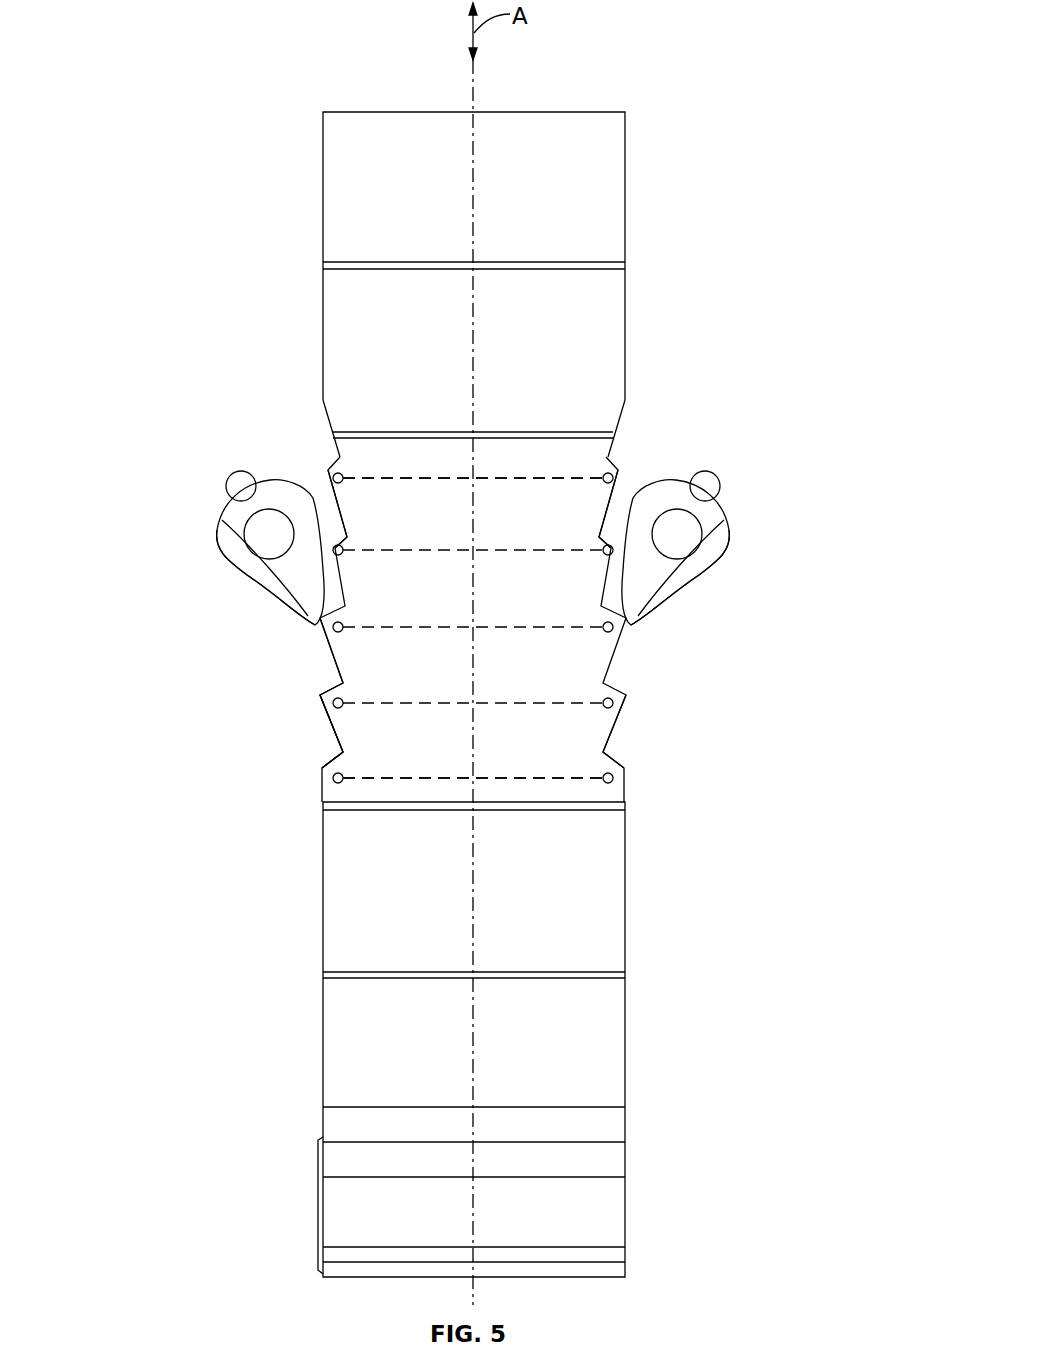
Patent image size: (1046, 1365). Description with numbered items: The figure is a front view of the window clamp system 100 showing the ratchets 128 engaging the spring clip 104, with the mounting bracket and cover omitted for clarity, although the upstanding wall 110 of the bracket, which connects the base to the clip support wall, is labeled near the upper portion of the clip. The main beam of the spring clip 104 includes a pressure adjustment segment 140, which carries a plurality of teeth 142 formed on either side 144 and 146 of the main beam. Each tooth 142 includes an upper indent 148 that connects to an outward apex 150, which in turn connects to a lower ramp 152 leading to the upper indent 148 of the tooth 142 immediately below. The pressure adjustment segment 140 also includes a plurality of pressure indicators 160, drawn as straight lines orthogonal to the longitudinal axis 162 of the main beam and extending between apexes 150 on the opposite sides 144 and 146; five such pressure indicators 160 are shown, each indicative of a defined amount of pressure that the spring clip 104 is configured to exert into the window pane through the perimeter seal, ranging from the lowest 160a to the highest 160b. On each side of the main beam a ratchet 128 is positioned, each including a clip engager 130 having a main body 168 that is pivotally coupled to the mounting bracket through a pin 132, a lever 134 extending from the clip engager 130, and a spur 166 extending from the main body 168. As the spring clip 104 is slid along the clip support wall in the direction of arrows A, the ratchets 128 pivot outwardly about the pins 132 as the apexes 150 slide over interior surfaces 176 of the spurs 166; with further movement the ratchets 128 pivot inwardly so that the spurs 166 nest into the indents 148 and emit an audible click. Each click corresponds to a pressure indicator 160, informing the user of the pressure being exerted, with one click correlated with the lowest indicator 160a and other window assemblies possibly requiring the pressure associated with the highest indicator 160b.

The window clamp system 100 is at (160, 82).
The spring clip 104 is at (490, 165).
The upstanding wall 110 is at (627, 363).
The ratchet 128 is at (215, 557).
The clip engager 130 is at (268, 597).
The pin 132 is at (262, 527).
The lever 134 is at (230, 482).
The pressure adjustment segment 140 is at (293, 712).
The tooth 142 is at (335, 495).
The first side of the main beam 144 is at (318, 740).
The second side of the main beam 146 is at (630, 755).
The upper indent 148 is at (333, 457).
The outward apex 150 is at (328, 475).
The lower ramp 152 is at (348, 490).
The pressure indicator 160 is at (520, 477).
The lowest pressure indicator 160a is at (627, 792).
The highest pressure indicator 160b is at (570, 477).
The longitudinal axis 162 is at (476, 100).
The spur 166 is at (303, 622).
The main body 168 is at (245, 578).
The interior surface 176 is at (345, 600).